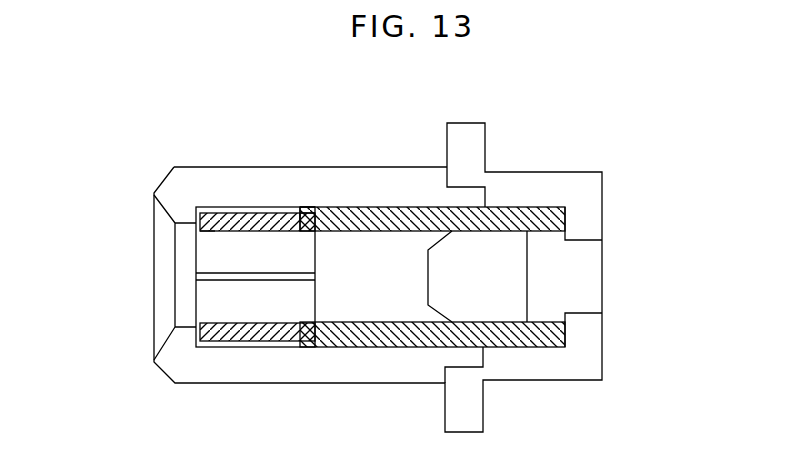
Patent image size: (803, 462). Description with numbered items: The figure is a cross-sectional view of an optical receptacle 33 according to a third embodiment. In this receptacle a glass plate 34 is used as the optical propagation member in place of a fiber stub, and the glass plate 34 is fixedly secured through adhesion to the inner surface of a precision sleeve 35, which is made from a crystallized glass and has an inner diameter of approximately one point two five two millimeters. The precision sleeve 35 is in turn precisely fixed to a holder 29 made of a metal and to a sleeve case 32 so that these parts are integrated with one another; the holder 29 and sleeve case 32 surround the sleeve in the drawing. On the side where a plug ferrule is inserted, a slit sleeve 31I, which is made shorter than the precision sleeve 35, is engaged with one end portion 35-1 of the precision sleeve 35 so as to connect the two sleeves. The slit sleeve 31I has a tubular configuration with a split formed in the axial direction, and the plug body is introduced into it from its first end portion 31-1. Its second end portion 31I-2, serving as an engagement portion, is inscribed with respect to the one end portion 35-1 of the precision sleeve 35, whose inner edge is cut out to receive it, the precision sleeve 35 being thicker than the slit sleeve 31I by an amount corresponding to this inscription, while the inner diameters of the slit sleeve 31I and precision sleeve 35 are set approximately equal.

The holder 29 is at (512, 197).
The first end portion 31-1 is at (208, 234).
The slit sleeve 31I is at (255, 333).
The second end portion 31I-2 is at (302, 218).
The sleeve case 32 is at (183, 370).
The optical receptacle 33 is at (405, 167).
The glass plate 34 is at (480, 285).
The precision sleeve 35 is at (349, 333).
The one end portion 35-1 is at (307, 207).